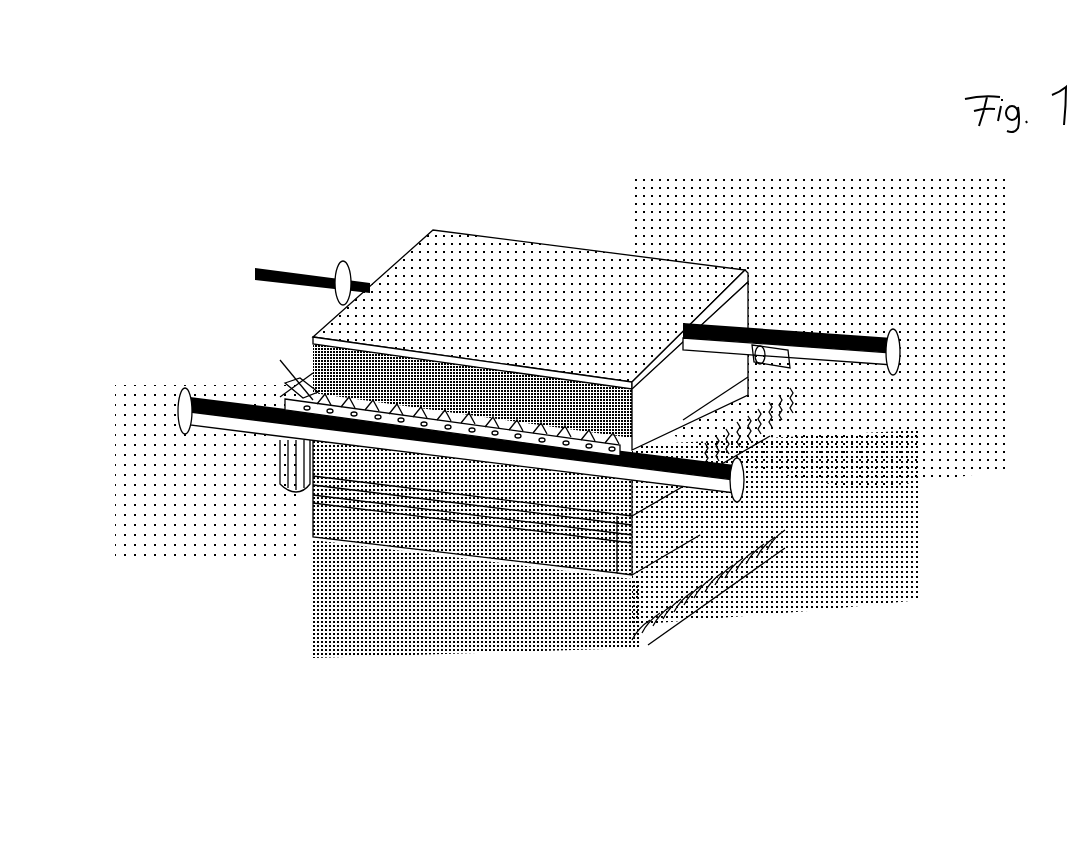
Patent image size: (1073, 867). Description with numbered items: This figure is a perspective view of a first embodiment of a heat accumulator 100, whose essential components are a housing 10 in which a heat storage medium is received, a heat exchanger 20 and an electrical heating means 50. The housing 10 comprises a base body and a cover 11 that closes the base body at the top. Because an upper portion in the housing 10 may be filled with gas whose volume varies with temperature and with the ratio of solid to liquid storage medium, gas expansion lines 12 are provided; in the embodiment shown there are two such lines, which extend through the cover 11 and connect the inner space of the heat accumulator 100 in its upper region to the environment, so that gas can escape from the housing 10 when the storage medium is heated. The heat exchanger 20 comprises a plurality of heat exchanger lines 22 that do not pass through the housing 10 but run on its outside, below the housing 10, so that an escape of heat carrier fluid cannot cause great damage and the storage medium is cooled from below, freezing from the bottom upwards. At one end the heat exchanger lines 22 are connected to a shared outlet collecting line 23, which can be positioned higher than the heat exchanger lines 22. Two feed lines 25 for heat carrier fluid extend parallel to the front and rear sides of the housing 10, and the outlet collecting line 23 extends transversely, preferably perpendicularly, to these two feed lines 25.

The housing 10 is at (578, 324).
The cover 11 is at (750, 280).
The gas expansion line 12 is at (285, 274).
The heat exchanger 20 is at (790, 417).
The heat exchanger lines 22 is at (287, 395).
The outlet collecting line 23 is at (777, 362).
The feed line 25 is at (857, 335).
The electrical heating means 50 is at (313, 403).
The heat accumulator 100 is at (777, 642).